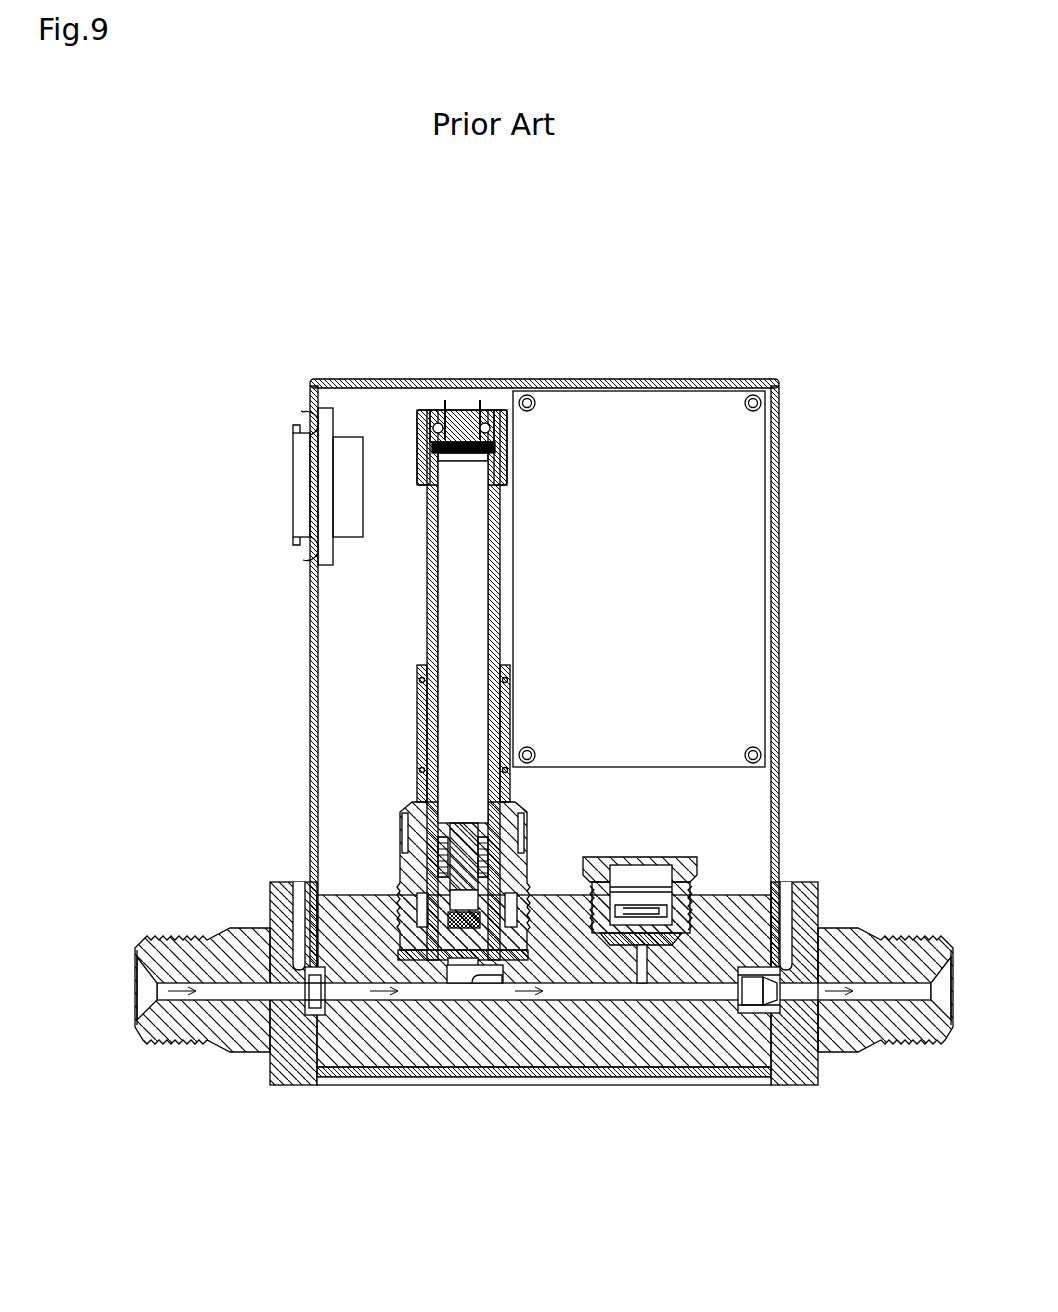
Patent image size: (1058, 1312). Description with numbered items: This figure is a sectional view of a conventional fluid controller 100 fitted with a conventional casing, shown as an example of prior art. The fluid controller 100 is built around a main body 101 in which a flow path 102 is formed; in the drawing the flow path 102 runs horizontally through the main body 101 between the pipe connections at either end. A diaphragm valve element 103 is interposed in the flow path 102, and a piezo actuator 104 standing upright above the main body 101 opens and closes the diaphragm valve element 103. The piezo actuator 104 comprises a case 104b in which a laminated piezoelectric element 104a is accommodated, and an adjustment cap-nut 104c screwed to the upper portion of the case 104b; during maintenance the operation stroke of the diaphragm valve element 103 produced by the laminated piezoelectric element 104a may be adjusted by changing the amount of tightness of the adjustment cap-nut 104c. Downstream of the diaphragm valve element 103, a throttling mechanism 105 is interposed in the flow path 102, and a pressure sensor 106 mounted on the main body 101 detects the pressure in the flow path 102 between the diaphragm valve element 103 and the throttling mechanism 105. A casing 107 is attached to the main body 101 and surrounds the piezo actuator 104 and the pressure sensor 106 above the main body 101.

The fluid controller 100 is at (352, 760).
The main body 101 is at (540, 1057).
The flow path 102 is at (345, 998).
The diaphragm valve element 103 is at (503, 968).
The piezo actuator 104 is at (410, 692).
The laminated piezoelectric element 104a is at (463, 592).
The case 104b is at (427, 540).
The adjustment cap-nut 104c is at (418, 505).
The throttling mechanism 105 is at (820, 1040).
The pressure sensor 106 is at (665, 846).
The casing 107 is at (312, 785).